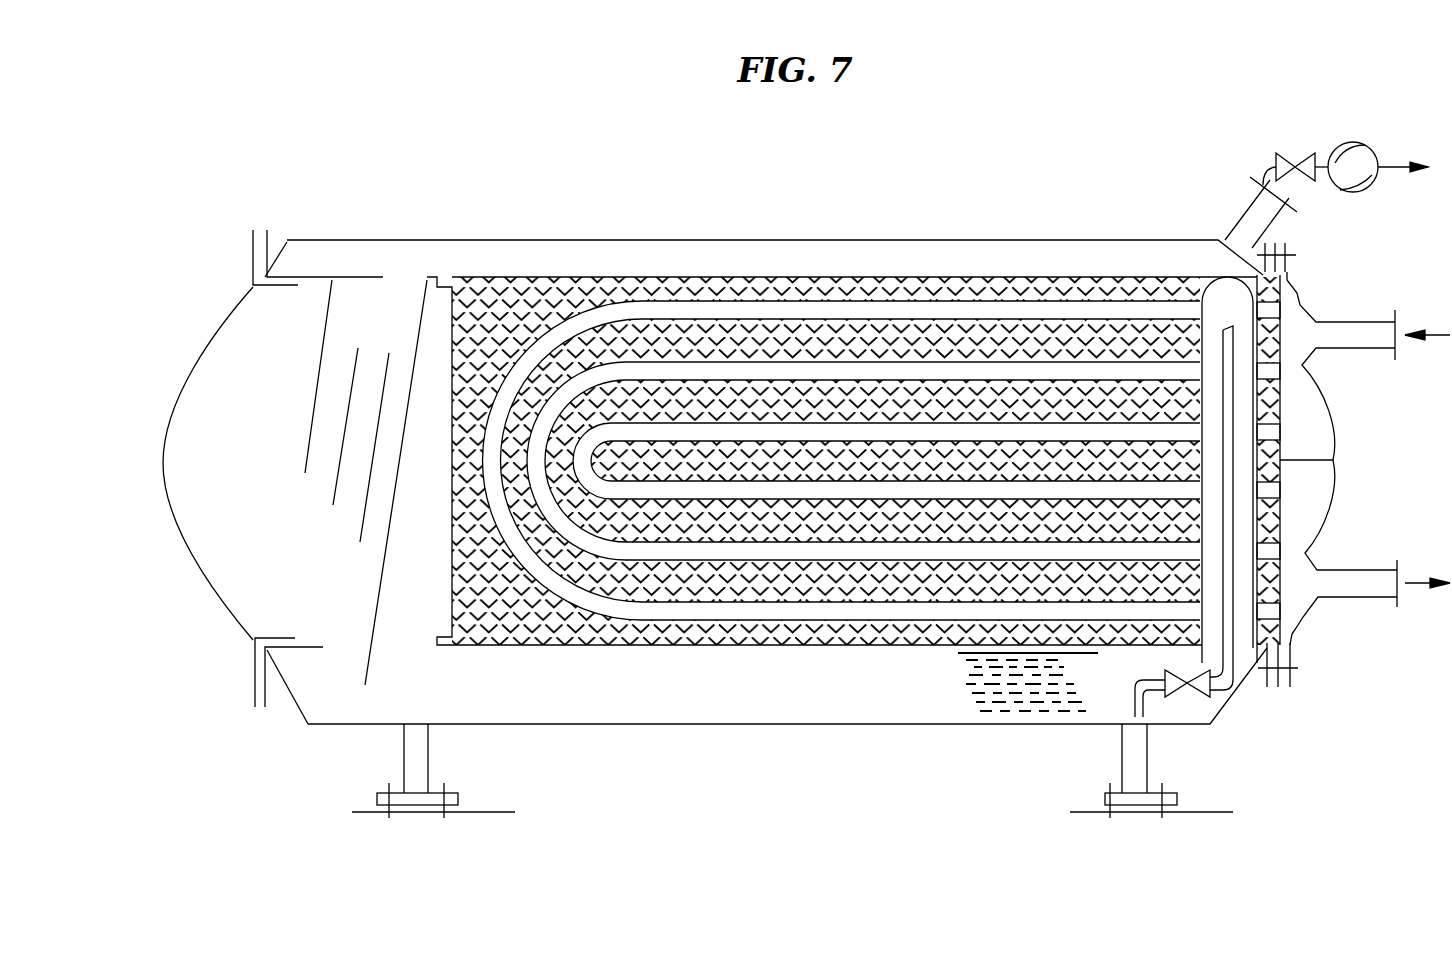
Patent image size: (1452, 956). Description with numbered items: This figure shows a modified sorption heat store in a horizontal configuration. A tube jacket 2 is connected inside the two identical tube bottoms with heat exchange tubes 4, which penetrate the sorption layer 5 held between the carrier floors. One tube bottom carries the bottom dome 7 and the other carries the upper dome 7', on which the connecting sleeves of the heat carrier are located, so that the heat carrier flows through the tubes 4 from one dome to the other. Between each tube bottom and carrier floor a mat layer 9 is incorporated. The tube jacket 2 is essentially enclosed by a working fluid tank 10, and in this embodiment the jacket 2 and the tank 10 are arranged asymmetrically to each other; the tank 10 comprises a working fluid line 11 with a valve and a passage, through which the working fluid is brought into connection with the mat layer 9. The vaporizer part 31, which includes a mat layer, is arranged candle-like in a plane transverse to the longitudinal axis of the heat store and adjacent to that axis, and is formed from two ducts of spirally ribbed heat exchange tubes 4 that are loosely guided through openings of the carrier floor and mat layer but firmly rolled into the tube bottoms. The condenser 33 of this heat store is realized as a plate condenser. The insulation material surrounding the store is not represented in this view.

The tube jacket 2 is at (570, 277).
The heat exchange tube 4 is at (687, 308).
The sorption layer 5 is at (478, 297).
The bottom dome 7 is at (1365, 458).
The upper dome 7' is at (199, 463).
The mat layer 9 is at (1243, 408).
The working fluid tank 10 is at (708, 702).
The working fluid line 11 is at (1233, 688).
The vaporizer part 31 is at (1240, 315).
The condenser 33 is at (312, 405).